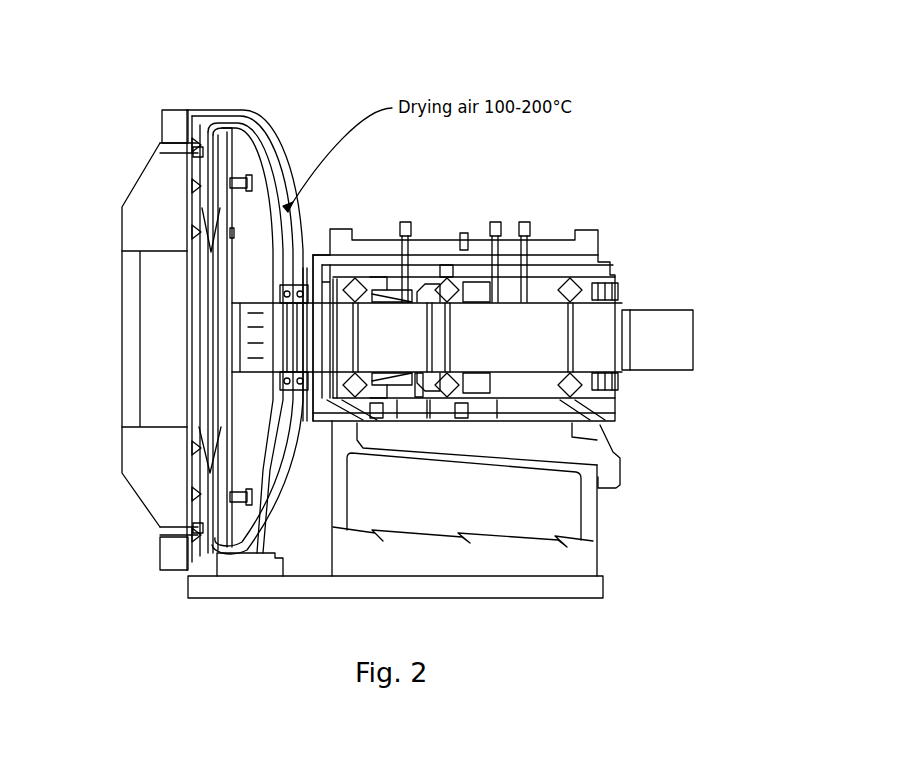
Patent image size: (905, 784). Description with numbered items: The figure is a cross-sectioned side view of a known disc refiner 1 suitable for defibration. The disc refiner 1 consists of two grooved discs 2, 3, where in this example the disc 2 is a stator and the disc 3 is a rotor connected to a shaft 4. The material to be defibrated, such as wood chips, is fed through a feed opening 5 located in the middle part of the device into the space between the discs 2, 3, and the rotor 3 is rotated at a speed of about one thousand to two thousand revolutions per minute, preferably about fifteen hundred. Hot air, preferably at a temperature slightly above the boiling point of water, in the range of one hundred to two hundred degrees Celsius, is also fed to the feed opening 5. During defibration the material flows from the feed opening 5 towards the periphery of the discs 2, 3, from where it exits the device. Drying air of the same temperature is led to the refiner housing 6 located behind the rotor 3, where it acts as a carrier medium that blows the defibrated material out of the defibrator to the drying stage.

The disc refiner 1 is at (133, 122).
The grooved disc 2 is at (207, 193).
The grooved disc 3 is at (230, 303).
The shaft 4 is at (275, 350).
The feed opening 5 is at (167, 342).
The refiner housing 6 is at (277, 167).